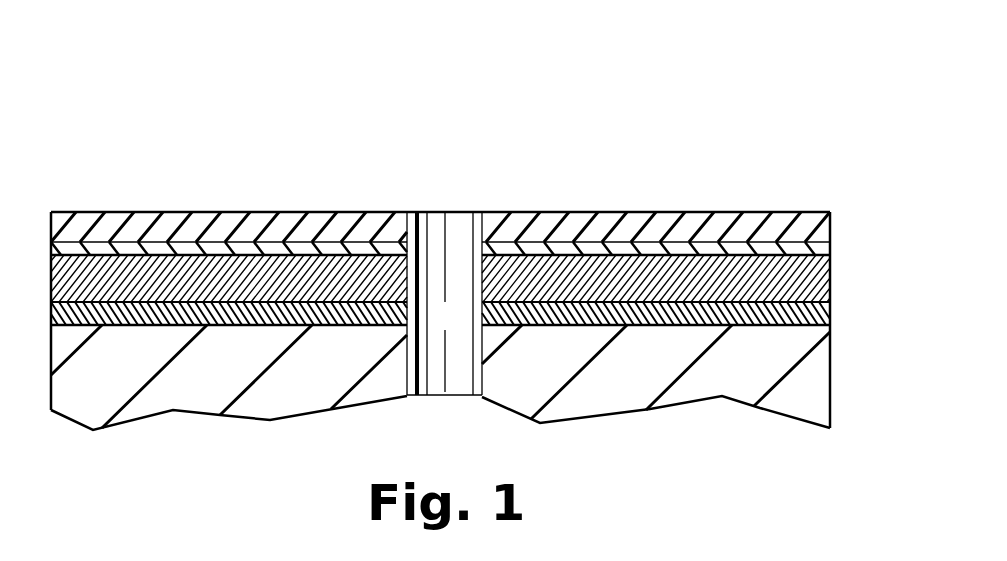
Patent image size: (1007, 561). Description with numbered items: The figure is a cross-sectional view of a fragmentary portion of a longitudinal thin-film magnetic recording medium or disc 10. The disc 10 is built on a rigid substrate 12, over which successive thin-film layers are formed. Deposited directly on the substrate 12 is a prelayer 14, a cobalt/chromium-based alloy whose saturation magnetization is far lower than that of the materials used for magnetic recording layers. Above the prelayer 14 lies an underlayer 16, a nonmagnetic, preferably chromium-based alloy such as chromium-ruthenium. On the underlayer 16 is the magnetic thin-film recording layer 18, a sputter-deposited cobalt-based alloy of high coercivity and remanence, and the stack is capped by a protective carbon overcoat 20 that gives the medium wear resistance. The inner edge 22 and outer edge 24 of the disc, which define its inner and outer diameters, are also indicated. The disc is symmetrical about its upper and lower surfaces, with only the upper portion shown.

The thin-film medium or disc 10 is at (679, 103).
The rigid substrate 12 is at (747, 388).
The prelayer 14 is at (823, 305).
The underlayer 16 is at (820, 282).
The magnetic thin-film recording layer 18 is at (828, 250).
The protective carbon overcoat 20 is at (823, 225).
The inner edge 22 is at (830, 388).
The outer edge 24 is at (484, 380).